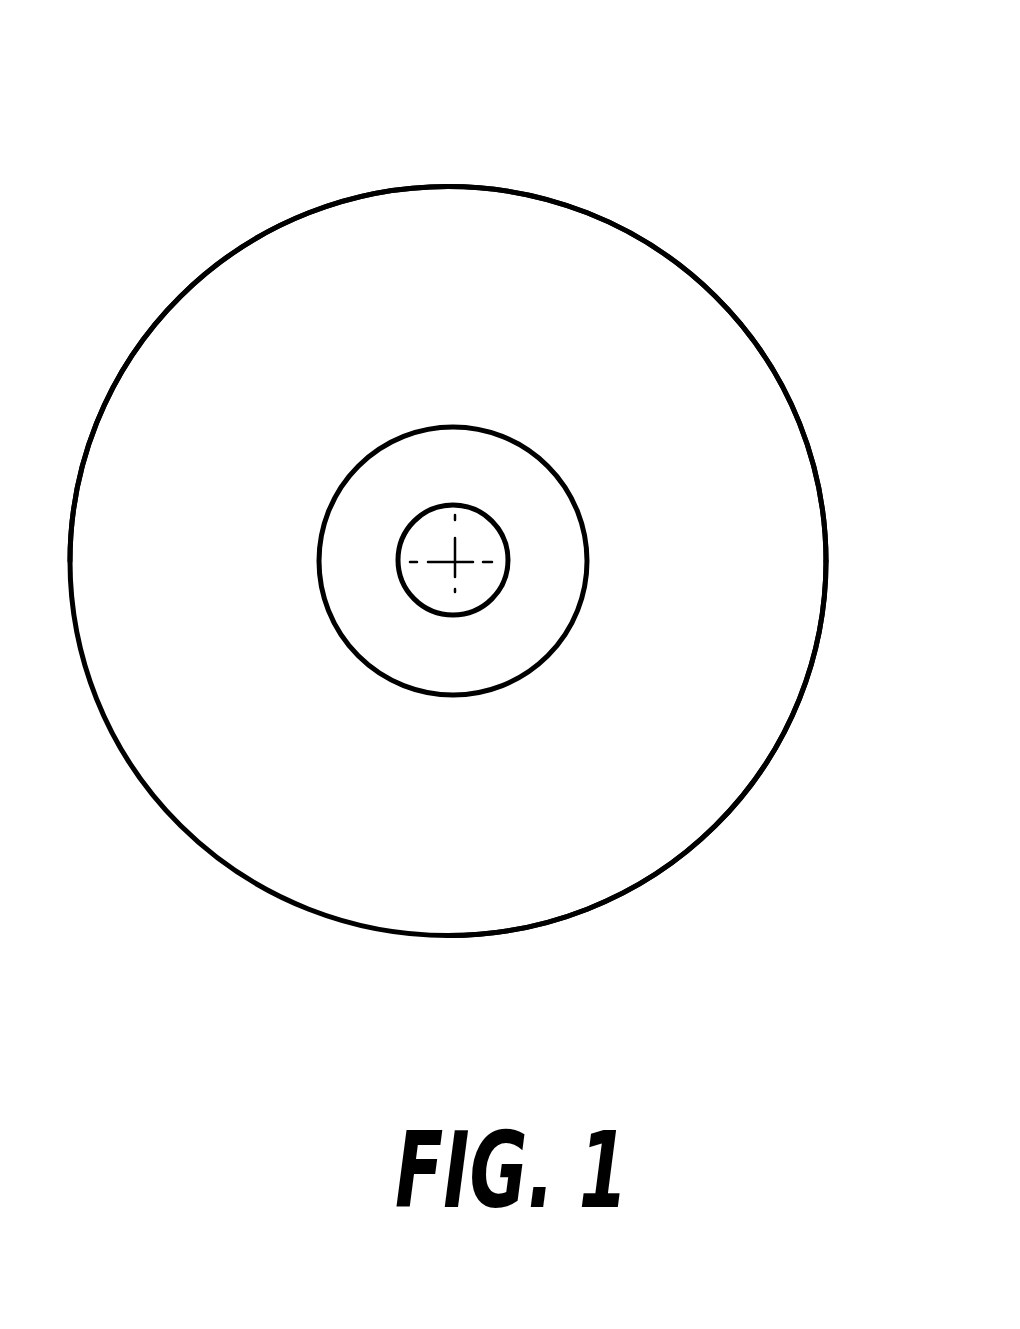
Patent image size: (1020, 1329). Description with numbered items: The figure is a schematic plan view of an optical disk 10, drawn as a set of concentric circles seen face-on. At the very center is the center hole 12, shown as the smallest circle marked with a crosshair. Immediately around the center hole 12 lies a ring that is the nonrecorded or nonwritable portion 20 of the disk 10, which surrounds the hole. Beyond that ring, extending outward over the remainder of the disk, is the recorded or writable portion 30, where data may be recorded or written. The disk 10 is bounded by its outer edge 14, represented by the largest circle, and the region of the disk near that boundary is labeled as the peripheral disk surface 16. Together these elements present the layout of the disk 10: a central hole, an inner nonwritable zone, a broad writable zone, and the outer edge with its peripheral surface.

The optical disk 10 is at (612, 186).
The center hole 12 is at (420, 602).
The outer edge 14 is at (758, 343).
The peripheral disk surface 16 is at (733, 760).
The nonrecorded or nonwritable portion 20 is at (493, 488).
The recorded or writable portion 30 is at (505, 348).